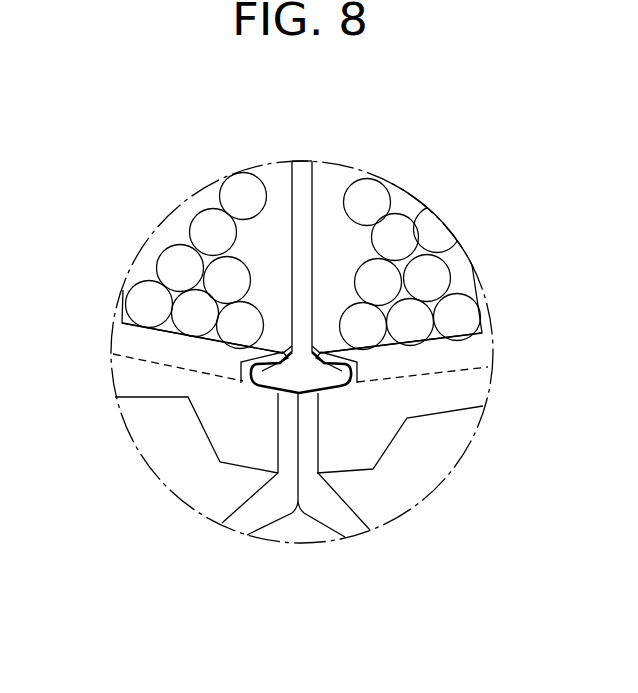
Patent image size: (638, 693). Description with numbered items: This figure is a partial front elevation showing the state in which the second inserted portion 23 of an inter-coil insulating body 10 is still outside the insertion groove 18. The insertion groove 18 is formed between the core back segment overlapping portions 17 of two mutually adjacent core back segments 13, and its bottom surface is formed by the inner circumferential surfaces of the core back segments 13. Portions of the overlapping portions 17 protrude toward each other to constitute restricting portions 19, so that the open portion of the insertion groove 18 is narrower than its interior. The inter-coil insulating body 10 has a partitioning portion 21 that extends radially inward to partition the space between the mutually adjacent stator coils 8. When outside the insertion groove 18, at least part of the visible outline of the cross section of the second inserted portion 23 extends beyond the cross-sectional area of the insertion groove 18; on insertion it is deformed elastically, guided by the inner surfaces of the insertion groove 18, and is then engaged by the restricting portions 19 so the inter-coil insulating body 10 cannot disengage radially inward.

The stator coil 8 is at (397, 227).
The inter-coil insulating body 10 is at (329, 181).
The core back segment 13 is at (270, 510).
The core back segment overlapping portion 17 is at (258, 355).
The insertion groove 18 is at (355, 386).
The restricting portion 19 is at (173, 347).
The partitioning portion 21 is at (293, 218).
The second inserted portion 23 is at (243, 375).